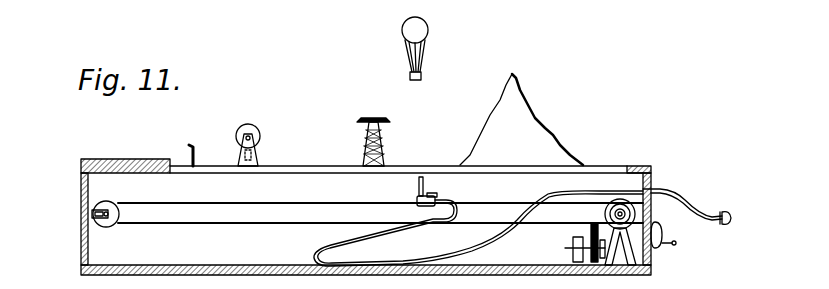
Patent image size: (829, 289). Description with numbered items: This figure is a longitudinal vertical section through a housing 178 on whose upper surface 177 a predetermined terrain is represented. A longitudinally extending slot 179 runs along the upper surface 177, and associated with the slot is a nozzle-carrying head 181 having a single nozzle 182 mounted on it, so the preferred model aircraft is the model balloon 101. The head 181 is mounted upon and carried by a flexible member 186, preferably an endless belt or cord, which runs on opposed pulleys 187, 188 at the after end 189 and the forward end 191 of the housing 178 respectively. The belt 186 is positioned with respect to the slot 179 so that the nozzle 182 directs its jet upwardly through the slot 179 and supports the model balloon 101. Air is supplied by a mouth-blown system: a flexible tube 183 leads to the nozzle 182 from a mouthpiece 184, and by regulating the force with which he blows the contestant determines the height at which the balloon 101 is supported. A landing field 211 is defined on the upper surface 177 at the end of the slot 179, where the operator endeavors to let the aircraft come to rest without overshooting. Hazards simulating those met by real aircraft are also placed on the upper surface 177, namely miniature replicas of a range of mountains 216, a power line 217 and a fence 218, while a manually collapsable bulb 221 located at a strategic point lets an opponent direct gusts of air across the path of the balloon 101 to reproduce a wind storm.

The model balloon 101 is at (428, 30).
The range of mountains 216 is at (514, 105).
The manually collapsable bulb 221 is at (251, 128).
The fence 218 is at (197, 144).
The longitudinally extending slot 179 is at (288, 171).
The power line 217 is at (384, 140).
The nozzle 182 is at (424, 190).
The landing field 211 is at (128, 159).
The upper surface 177 is at (628, 165).
The forward end 191 is at (645, 180).
The pulley 188 is at (660, 191).
The mouthpiece 184 is at (730, 213).
The flexible member 186 is at (156, 203).
The after end 189 is at (82, 209).
The pulley 187 is at (110, 223).
The housing 178 is at (233, 265).
The nozzle-carrying head 181 is at (416, 200).
The flexible tube 183 is at (478, 250).